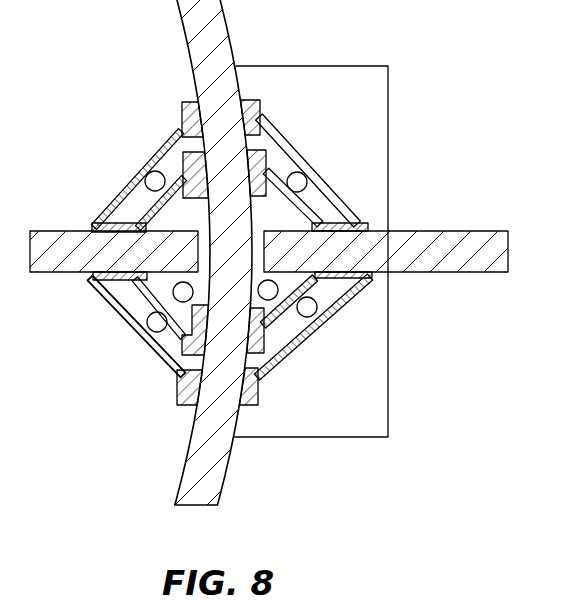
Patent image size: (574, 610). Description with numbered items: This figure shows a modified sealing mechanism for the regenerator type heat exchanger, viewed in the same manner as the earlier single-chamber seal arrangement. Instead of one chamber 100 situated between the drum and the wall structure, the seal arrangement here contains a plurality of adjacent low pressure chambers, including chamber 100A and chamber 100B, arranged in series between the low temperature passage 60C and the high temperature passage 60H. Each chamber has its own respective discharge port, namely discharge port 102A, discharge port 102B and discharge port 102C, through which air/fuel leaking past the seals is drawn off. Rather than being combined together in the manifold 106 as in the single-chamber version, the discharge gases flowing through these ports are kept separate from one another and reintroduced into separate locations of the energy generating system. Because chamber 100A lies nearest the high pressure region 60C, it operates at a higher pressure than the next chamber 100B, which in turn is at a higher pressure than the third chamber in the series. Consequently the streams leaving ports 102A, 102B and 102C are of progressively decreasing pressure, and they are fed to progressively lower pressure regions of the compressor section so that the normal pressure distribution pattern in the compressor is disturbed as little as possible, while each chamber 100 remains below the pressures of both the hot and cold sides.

The chamber 100 is at (284, 334).
The low pressure chamber 100A is at (257, 118).
The low pressure chamber 100B is at (285, 218).
The discharge port 102A is at (288, 176).
The discharge port 102B is at (287, 268).
The discharge port 102C is at (332, 311).
The manifold 106 is at (389, 68).
The low temperature passage 60C is at (477, 104).
The high temperature passage 60H is at (472, 426).